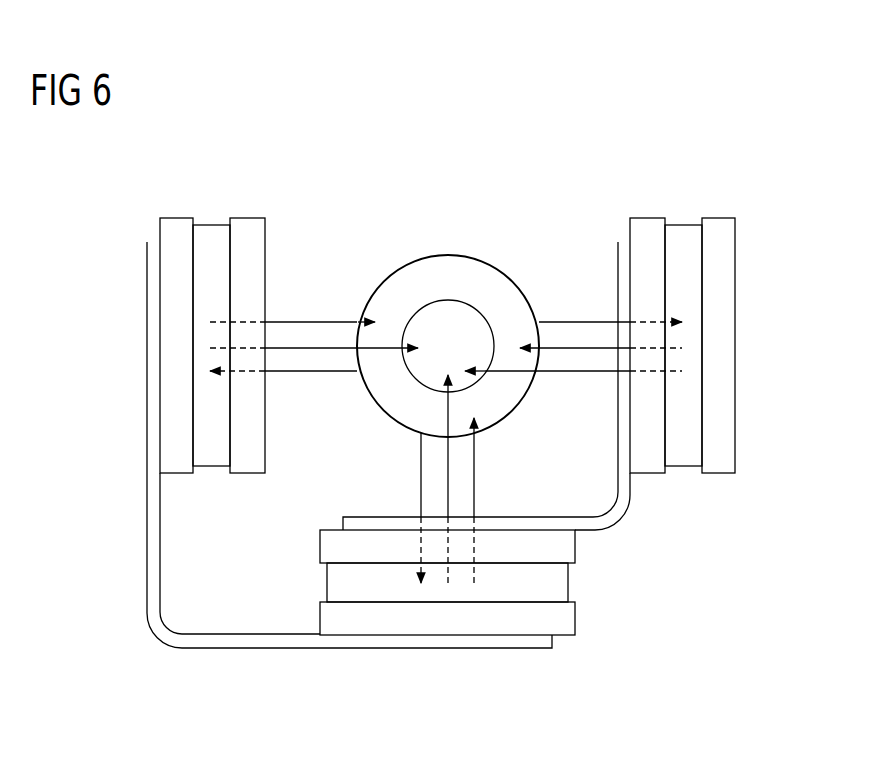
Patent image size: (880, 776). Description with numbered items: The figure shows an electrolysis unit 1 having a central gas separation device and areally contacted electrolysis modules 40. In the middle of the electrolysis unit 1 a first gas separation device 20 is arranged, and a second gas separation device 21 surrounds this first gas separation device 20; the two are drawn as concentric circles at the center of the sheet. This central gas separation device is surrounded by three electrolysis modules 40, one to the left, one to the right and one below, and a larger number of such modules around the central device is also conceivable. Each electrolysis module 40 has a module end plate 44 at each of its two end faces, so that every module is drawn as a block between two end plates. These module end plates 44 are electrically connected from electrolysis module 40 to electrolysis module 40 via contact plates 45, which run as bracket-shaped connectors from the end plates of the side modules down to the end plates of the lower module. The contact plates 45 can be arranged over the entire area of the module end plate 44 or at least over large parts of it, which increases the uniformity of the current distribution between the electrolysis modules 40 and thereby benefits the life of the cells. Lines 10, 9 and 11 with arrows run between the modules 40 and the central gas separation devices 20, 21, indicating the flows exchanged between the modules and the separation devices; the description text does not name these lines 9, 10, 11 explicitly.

The electrolysis unit 1 is at (561, 131).
The coolant line 9 is at (587, 345).
The coolant supply line 10 is at (553, 320).
The coolant return line 11 is at (556, 375).
The first gas separation device 20 is at (427, 317).
The second gas separation device 21 is at (481, 273).
The electrolysis module 40 is at (209, 225).
The module end plate 44 is at (174, 218).
The contact plate 45 is at (552, 528).